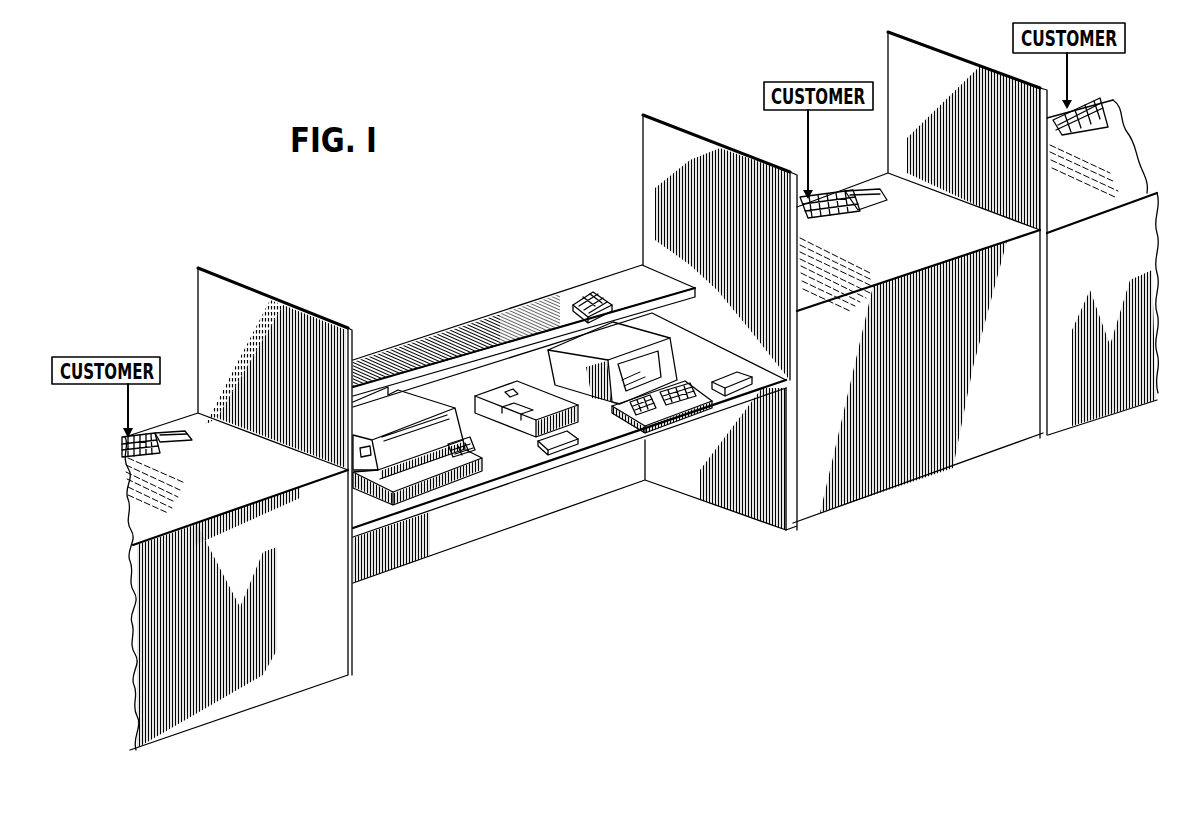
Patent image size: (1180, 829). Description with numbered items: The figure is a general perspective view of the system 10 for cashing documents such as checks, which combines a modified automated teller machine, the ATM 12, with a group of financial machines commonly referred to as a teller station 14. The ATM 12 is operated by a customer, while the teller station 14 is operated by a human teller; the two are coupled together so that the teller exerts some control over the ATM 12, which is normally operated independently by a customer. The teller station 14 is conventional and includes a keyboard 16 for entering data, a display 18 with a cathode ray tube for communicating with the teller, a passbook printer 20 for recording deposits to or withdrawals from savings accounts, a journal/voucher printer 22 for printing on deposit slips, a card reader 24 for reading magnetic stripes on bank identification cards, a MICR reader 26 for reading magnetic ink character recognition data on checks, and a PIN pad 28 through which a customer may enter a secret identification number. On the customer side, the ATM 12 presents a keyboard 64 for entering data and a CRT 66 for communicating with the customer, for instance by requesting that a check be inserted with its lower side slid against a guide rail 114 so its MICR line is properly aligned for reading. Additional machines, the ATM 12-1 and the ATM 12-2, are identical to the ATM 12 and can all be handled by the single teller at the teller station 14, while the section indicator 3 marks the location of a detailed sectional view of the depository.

The system 10 is at (388, 266).
The automated teller machine (ATM) 12 is at (972, 470).
The ATM 12-1 is at (1085, 408).
The ATM 12-2 is at (305, 682).
The guide rail 114 is at (640, 201).
The teller station 14 is at (425, 334).
The keyboard 16 is at (662, 405).
The display 18 is at (641, 369).
The passbook printer 20 is at (438, 480).
The journal/voucher printer 22 is at (503, 423).
The card reader 24 is at (735, 372).
The MICR reader 26 is at (559, 448).
The PIN pad 28 is at (570, 303).
The keyboard 64 is at (127, 447).
The CRT 66 is at (178, 441).
The section line for FIG. 3 is at (820, 170).